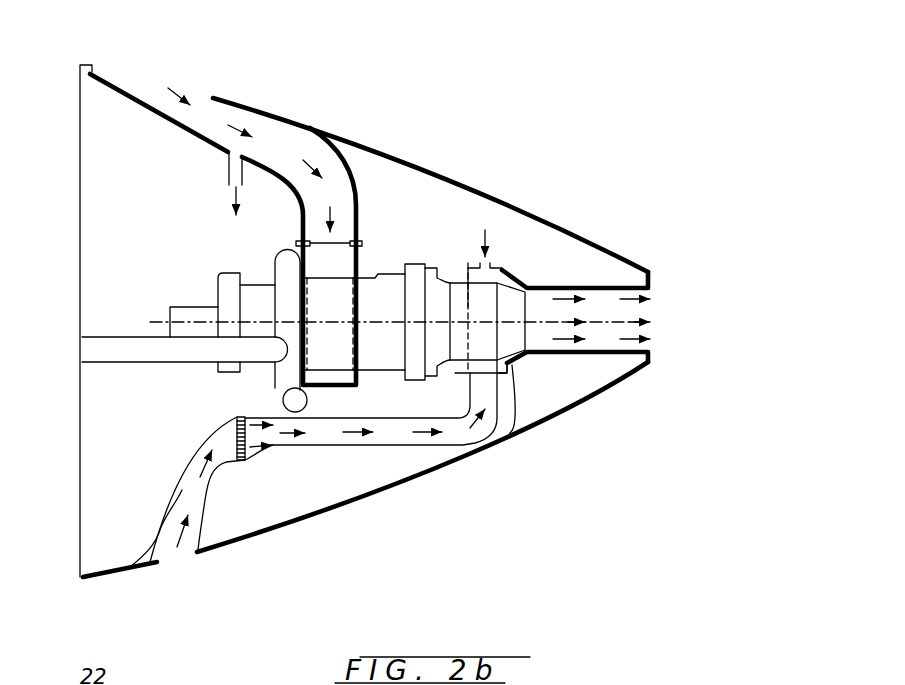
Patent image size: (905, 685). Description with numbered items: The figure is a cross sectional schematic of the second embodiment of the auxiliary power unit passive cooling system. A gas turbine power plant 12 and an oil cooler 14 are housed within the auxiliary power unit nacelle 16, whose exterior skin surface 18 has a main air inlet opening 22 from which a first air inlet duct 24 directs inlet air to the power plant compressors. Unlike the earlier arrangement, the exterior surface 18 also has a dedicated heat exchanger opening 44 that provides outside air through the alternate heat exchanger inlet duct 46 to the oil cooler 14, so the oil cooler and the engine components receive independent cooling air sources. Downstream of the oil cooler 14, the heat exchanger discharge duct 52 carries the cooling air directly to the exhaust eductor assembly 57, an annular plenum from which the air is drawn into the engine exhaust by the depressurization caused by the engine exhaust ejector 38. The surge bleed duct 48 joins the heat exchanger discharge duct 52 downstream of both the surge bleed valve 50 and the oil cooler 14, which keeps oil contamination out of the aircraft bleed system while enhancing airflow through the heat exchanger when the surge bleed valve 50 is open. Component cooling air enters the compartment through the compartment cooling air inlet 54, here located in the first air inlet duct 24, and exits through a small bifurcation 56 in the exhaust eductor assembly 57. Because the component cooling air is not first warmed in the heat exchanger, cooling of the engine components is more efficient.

The gas turbine power plant 12 is at (430, 275).
The oil cooler 14 is at (242, 462).
The auxiliary power unit nacelle 16 is at (103, 163).
The exterior skin surface 18 is at (434, 174).
The main air inlet opening 22 is at (157, 87).
The first air inlet duct 24 is at (332, 128).
The engine exhaust ejector 38 is at (515, 356).
The dedicated heat exchanger opening 44 is at (178, 542).
The alternate heat exchanger inlet duct 46 is at (130, 567).
The surge bleed duct 48 is at (283, 390).
The surge bleed valve 50 is at (290, 413).
The heat exchanger discharge duct 52 is at (403, 447).
The compartment cooling air inlet 54 is at (230, 153).
The small bifurcation 56 is at (493, 262).
The exhaust eductor assembly 57 is at (512, 365).